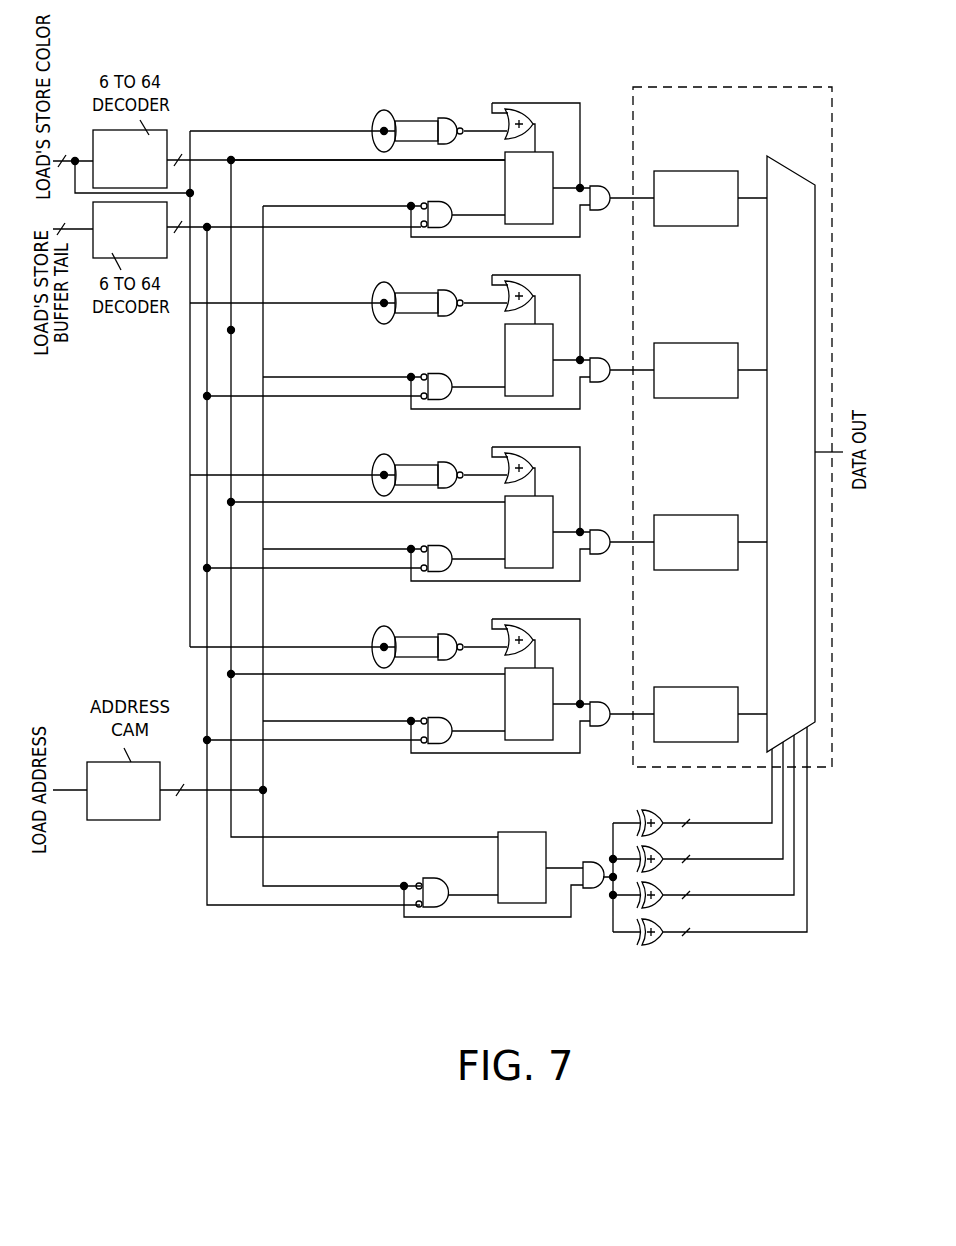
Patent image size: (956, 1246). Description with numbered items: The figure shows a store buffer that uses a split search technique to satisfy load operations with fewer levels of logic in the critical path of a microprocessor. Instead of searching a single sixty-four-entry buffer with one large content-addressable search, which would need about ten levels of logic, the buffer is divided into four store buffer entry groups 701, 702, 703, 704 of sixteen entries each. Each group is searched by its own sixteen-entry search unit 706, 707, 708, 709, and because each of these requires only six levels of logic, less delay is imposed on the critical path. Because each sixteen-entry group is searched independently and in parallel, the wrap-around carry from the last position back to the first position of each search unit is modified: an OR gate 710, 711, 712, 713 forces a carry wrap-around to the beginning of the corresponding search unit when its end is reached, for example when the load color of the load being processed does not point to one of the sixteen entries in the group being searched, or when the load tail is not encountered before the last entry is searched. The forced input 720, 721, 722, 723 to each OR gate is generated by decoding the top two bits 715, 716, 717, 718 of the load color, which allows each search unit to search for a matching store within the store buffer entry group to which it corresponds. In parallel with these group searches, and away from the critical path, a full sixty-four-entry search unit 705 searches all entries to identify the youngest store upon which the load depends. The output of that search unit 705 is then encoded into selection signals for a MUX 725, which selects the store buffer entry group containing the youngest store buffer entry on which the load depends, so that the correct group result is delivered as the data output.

The store buffer entry group 701 is at (696, 198).
The store buffer entry group 702 is at (696, 370).
The store buffer entry group 703 is at (696, 542).
The store buffer entry group 704 is at (696, 714).
The CCA-64 705 is at (522, 867).
The CCA-16 search unit 706 is at (529, 188).
The CCA-16 search unit 707 is at (529, 360).
The CCA-16 search unit 708 is at (529, 532).
The CCA-16 search unit 709 is at (529, 704).
The OR gate 710 is at (517, 108).
The OR gate 711 is at (517, 280).
The OR gate 712 is at (517, 452).
The OR gate 713 is at (517, 624).
The top two bits of the load color 715 is at (374, 118).
The top two bits of the load color 716 is at (374, 290).
The top two bits of the load color 717 is at (374, 462).
The top two bits of the load color 718 is at (374, 634).
The forced input 720 is at (478, 127).
The forced input 721 is at (478, 299).
The forced input 722 is at (478, 471).
The forced input 723 is at (478, 643).
The MUX 725 is at (791, 454).